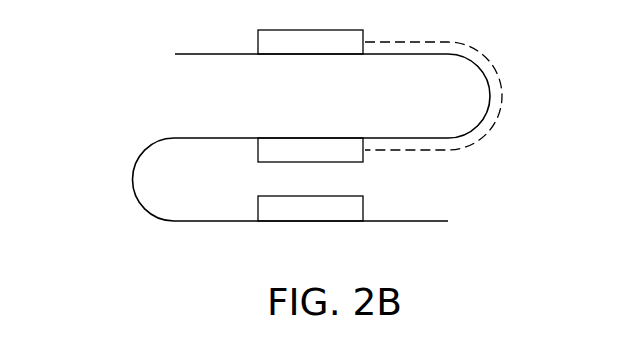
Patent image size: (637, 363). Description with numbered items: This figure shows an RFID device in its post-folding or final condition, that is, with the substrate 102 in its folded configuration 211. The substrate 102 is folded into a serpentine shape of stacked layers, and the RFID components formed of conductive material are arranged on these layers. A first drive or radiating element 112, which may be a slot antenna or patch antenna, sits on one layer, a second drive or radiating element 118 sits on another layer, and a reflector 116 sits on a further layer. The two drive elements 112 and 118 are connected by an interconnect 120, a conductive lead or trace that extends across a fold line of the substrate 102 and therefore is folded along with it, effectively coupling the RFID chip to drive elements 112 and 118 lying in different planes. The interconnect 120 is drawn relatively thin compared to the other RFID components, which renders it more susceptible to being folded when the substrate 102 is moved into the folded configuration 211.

The substrate 102 is at (178, 221).
The drive element 112 is at (258, 150).
The reflector 116 is at (363, 207).
The second drive element 118 is at (258, 43).
The interconnect 120 is at (502, 97).
The folded configuration 211 is at (122, 163).